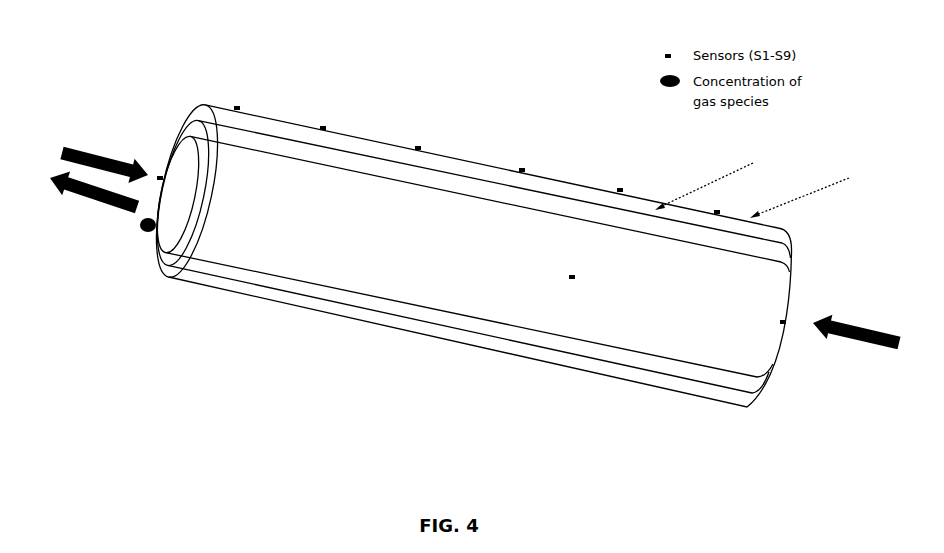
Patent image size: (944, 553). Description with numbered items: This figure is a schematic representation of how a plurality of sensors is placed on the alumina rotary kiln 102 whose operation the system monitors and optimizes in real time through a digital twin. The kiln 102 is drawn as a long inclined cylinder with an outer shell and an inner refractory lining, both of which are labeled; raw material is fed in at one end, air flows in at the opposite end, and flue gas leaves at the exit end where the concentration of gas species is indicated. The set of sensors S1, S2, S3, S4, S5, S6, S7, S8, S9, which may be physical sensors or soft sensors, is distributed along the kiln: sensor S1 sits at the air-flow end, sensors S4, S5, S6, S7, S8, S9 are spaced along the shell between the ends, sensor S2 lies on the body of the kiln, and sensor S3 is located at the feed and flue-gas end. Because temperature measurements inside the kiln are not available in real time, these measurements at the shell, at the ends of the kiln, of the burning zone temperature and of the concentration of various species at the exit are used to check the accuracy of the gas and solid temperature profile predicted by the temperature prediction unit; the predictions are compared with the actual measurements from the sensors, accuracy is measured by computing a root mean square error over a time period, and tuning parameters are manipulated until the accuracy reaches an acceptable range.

The alumina rotary kiln 102 is at (116, 66).
The sensor S1 is at (795, 311).
The sensor S2 is at (585, 265).
The sensor S3 is at (175, 178).
The sensor S4 is at (728, 205).
The sensor S5 is at (631, 183).
The sensor S6 is at (534, 164).
The sensor S7 is at (430, 142).
The sensor S8 is at (334, 123).
The sensor S9 is at (248, 101).